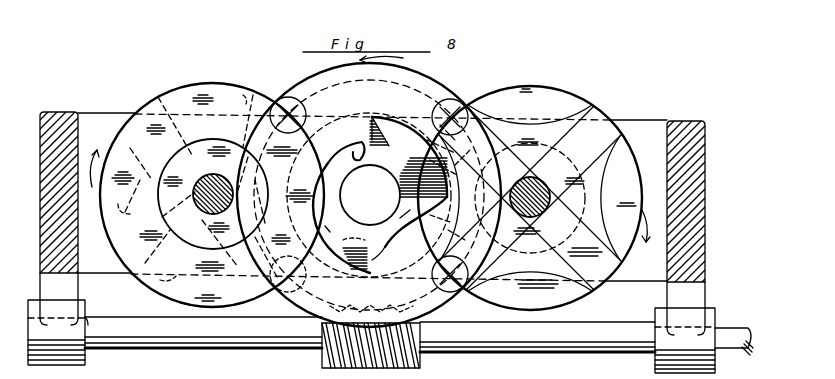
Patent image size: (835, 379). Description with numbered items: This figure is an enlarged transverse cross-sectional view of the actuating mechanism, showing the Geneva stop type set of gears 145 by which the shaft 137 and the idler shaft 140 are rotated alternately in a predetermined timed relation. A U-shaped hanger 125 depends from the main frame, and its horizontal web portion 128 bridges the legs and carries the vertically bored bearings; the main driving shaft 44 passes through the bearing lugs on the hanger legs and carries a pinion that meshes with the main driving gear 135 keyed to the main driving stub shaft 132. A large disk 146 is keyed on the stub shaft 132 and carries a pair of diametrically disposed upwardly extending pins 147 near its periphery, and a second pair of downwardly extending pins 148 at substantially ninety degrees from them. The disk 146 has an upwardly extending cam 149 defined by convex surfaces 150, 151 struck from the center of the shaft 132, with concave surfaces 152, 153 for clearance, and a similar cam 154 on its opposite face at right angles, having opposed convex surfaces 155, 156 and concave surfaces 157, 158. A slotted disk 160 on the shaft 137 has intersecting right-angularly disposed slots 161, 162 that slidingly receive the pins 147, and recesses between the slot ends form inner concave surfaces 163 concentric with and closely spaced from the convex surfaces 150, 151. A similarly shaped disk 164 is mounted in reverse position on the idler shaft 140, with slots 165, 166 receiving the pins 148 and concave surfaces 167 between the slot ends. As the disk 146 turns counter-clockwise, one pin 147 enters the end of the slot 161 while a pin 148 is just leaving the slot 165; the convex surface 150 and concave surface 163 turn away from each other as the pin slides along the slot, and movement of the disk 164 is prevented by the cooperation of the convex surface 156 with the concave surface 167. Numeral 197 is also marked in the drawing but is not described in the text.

The main driving shaft 44 is at (230, 352).
The U-shaped hanger 125 is at (712, 182).
The horizontal web portion 128 is at (650, 132).
The main driving stub shaft 132 is at (354, 162).
The main driving gear 135 is at (442, 306).
The shaft 137 is at (206, 207).
The idler shaft 140 is at (541, 182).
The set of gears 145 is at (306, 75).
The large disk 146 is at (443, 84).
The upwardly extending pins 147 is at (436, 284).
The downwardly extending pins 148 is at (310, 288).
The cam 149 is at (385, 247).
The convex surface 150 is at (324, 226).
The convex surface 151 is at (444, 143).
The concave surface 152 is at (386, 136).
The concave surface 153 is at (398, 217).
The cam 154 is at (380, 105).
The convex surface 155 is at (364, 141).
The convex surface 156 is at (371, 297).
The concave surface 157 is at (456, 173).
The concave surface 158 is at (356, 257).
The slotted disk 160 is at (187, 82).
The slot 161 is at (137, 265).
The slot 162 is at (143, 149).
The concave surfaces 163 is at (188, 293).
The disk 164 is at (587, 100).
The slot 165 is at (572, 266).
The slot 166 is at (608, 149).
The concave surfaces 167 is at (514, 277).
The pin 197 is at (450, 222).